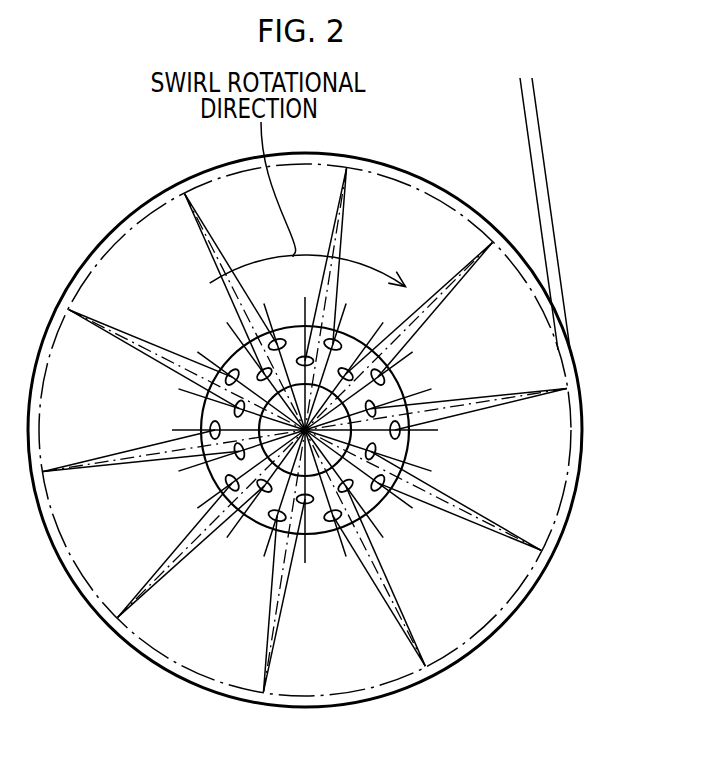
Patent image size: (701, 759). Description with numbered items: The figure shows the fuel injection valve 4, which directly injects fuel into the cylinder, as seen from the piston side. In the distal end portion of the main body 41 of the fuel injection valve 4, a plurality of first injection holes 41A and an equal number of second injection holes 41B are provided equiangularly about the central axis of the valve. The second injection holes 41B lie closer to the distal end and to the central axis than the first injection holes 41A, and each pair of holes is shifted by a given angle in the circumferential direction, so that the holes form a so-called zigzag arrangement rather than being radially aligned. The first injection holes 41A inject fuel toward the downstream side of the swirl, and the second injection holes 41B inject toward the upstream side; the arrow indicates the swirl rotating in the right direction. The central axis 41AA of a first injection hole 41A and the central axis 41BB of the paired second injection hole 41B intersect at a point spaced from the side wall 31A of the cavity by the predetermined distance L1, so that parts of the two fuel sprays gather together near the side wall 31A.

The side wall 31A is at (460, 203).
The fuel injection valve 4 is at (212, 330).
The main body 41 is at (396, 382).
The first injection holes 41A is at (406, 434).
The second injection holes 41B is at (412, 404).
The central axis of the first injection hole 41AA is at (470, 413).
The central axis of the second injection hole 41BB is at (507, 387).
The predetermined distance L1 is at (478, 95).